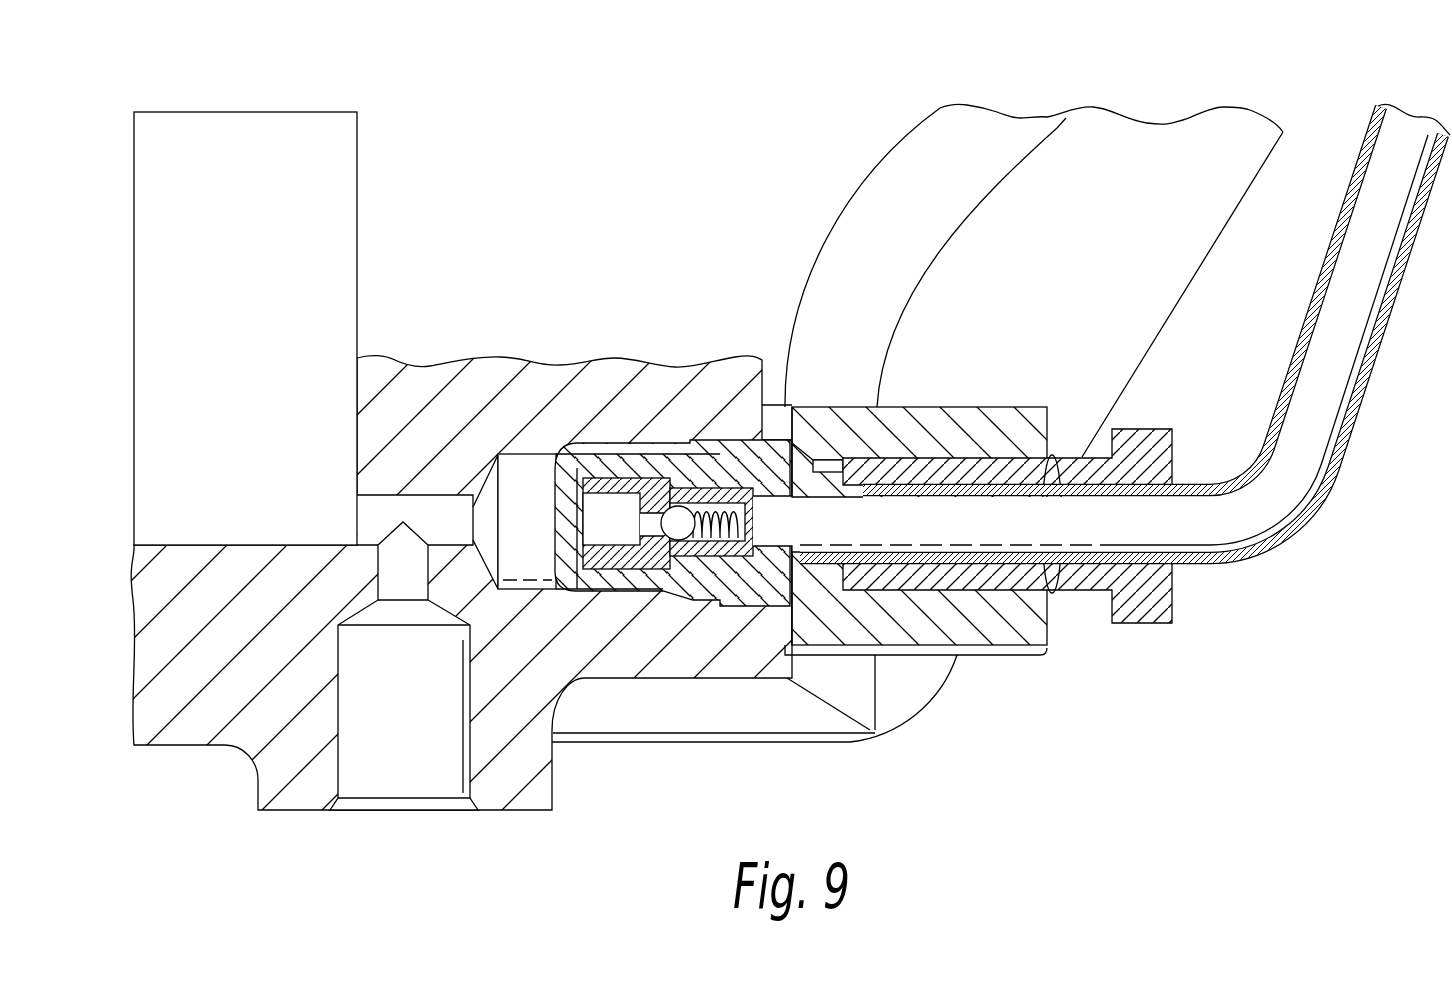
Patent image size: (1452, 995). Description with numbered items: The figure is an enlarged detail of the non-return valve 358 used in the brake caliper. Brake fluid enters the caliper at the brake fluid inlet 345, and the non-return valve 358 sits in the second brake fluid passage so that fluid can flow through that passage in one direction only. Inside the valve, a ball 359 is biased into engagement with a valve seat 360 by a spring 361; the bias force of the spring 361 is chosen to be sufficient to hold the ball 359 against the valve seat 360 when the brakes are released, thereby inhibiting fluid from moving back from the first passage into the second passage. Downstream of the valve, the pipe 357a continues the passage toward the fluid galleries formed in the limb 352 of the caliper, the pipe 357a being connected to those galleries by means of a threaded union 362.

The brake fluid inlet 345 is at (408, 812).
The limb 352 is at (1152, 297).
The pipe 357a is at (1325, 400).
The non-return valve 358 is at (623, 437).
The ball 359 is at (677, 539).
The valve seat 360 is at (681, 507).
The spring 361 is at (737, 546).
The threaded union 362 is at (1155, 605).